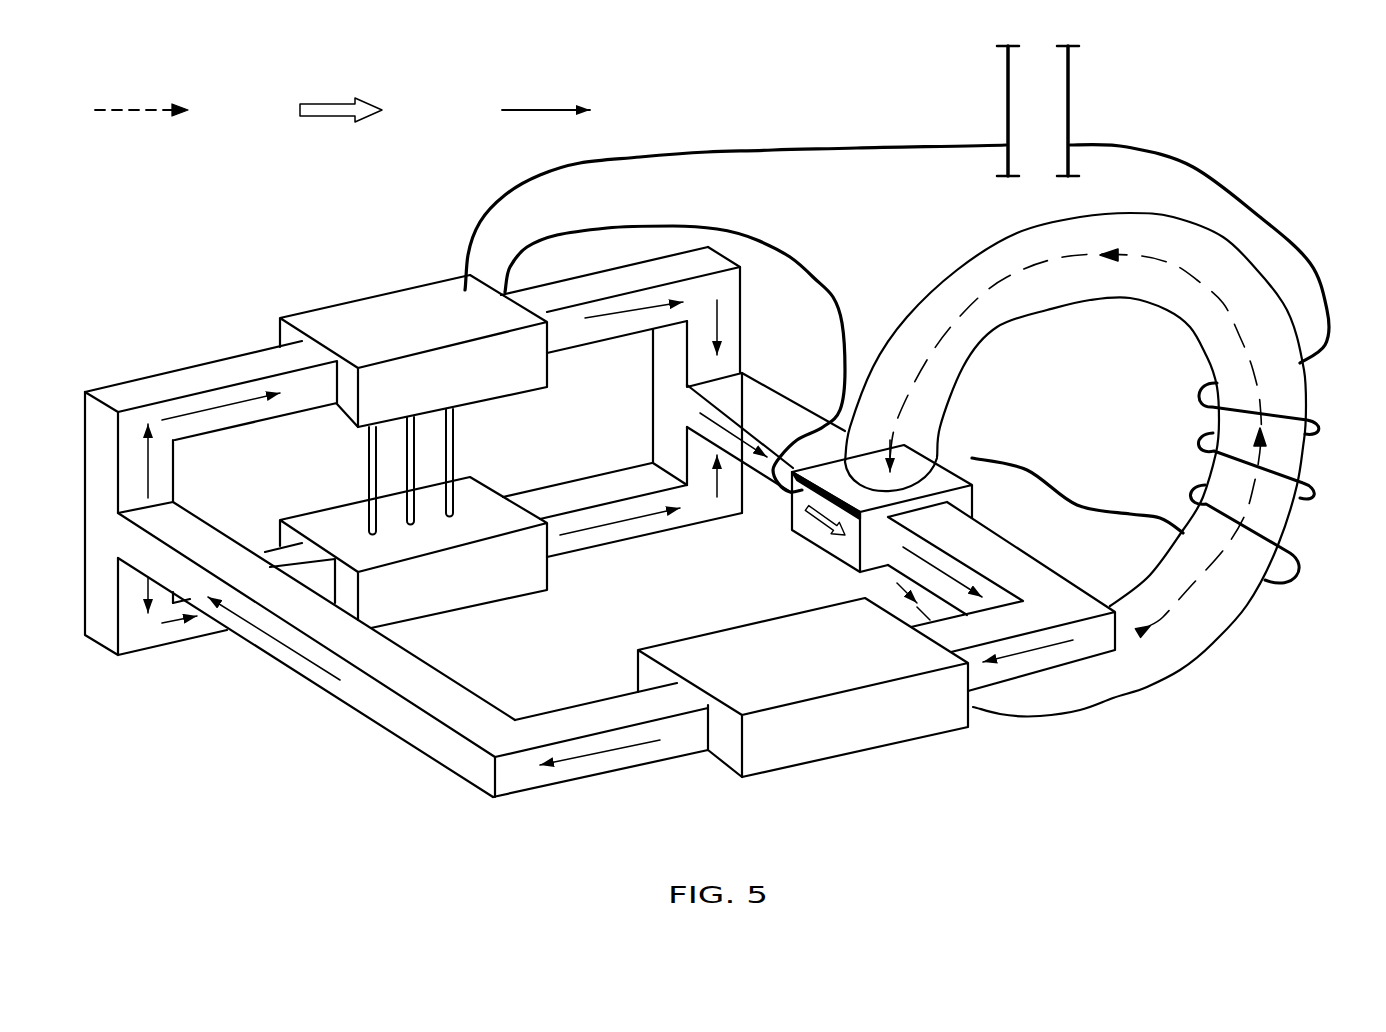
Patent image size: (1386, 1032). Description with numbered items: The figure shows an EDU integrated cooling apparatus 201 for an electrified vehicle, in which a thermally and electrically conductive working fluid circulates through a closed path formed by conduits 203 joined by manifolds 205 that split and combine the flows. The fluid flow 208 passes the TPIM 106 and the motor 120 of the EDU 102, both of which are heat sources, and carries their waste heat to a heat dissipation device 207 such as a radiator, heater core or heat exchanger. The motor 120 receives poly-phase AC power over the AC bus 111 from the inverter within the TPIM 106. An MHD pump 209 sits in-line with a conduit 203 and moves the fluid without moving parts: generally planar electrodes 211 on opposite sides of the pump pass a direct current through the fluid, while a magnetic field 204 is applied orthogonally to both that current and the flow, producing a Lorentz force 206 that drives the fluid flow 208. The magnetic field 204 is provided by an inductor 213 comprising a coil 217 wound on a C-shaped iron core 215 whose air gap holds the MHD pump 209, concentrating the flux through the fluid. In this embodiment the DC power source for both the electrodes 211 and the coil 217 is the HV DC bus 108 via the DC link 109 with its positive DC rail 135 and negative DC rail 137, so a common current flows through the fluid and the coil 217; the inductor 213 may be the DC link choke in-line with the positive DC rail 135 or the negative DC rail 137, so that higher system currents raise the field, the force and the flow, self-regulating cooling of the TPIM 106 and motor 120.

The EDU 102 is at (381, 432).
The TPIM 106 is at (330, 315).
The HV DC bus 108 is at (997, 93).
The DC link 109 is at (717, 228).
The AC bus 111 is at (338, 458).
The motor 120 is at (410, 622).
The positive DC rail 135 is at (1123, 145).
The negative DC rail 137 is at (775, 148).
The EDU integrated cooling apparatus 201 is at (600, 539).
The conduits 203 is at (203, 368).
The magnetic field 204 is at (141, 129).
The manifolds 205 is at (178, 495).
The Lorentz force 206 is at (340, 126).
The heat dissipation device 207 is at (690, 648).
The fluid flow 208 is at (545, 132).
The MHD pump 209 is at (973, 430).
The electrodes 211 is at (840, 552).
The inductor 213 is at (1115, 444).
The iron core 215 is at (1118, 212).
The coil 217 is at (1203, 400).